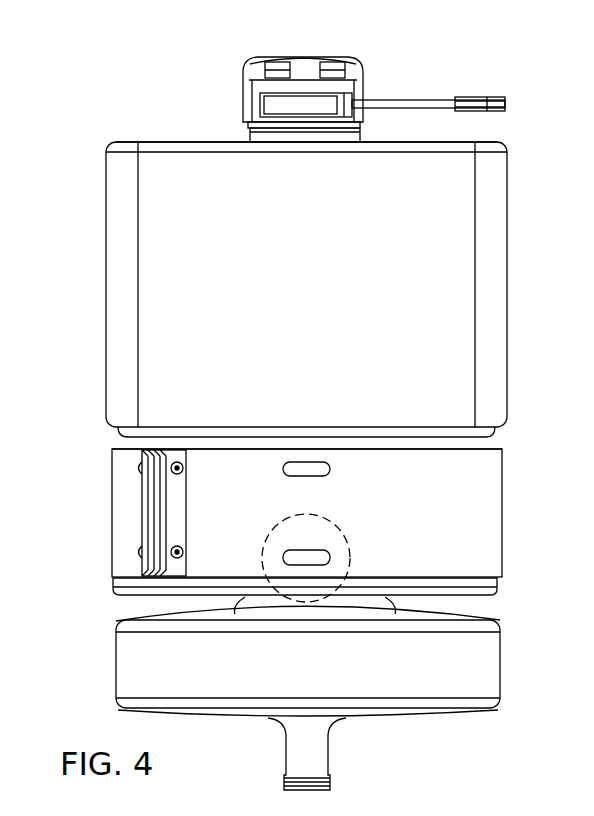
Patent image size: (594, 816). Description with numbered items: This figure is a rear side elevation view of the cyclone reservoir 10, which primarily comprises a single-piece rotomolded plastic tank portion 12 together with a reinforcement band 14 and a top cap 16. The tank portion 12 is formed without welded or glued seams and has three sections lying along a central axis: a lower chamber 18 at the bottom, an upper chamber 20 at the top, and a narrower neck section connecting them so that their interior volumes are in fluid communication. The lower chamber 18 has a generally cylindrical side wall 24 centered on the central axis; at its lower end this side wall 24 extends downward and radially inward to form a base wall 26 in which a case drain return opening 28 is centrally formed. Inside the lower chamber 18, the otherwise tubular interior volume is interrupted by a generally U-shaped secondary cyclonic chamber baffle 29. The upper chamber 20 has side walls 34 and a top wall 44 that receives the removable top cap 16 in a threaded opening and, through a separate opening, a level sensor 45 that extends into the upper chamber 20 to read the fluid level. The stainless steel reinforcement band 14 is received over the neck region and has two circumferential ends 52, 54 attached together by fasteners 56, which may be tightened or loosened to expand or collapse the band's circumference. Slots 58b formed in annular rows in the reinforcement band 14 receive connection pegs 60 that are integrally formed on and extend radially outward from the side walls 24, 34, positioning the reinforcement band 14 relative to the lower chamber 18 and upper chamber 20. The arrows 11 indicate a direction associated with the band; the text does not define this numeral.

The cyclone reservoir 10 is at (534, 138).
The rotation direction 11 is at (294, 511).
The tank portion 12 is at (480, 318).
The reinforcement band 14 is at (490, 515).
The top cap 16 is at (362, 92).
The lower chamber 18 is at (135, 668).
The upper chamber 20 is at (128, 292).
The side wall 24 is at (344, 670).
The base wall 26 is at (242, 718).
The case drain return opening 28 is at (313, 762).
The secondary cyclonic chamber baffle 29 is at (398, 620).
The side walls 34 is at (272, 290).
The top wall 44 is at (190, 143).
The level sensor 45 is at (300, 104).
The circumferential end 52 is at (140, 512).
The circumferential end 54 is at (188, 512).
The fasteners 56 is at (183, 468).
The slots 58b is at (305, 462).
The connection pegs 60 is at (330, 468).